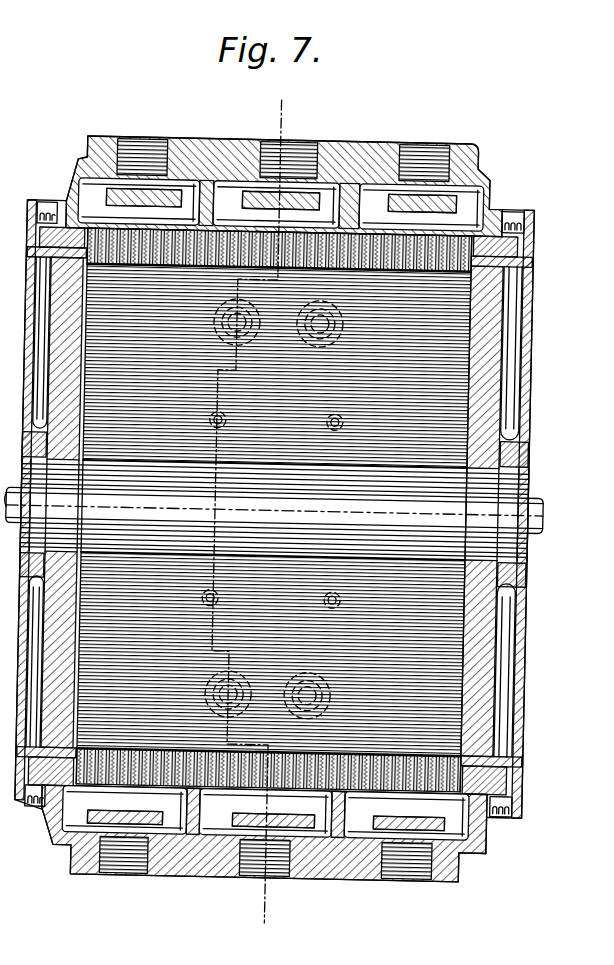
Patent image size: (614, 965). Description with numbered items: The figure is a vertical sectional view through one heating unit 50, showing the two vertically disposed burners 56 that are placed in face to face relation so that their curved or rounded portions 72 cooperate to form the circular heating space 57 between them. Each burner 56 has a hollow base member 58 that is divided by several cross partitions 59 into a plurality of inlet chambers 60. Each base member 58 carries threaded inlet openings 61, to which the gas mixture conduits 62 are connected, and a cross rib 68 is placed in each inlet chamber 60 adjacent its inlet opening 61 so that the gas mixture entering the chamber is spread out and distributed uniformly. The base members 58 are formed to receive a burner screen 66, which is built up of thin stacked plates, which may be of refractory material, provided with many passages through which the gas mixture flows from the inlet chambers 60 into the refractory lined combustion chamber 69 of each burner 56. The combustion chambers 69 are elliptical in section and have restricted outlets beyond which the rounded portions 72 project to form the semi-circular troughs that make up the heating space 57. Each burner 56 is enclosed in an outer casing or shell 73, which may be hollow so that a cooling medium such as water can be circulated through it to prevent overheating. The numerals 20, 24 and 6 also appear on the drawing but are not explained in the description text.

The heating unit 50 is at (74, 148).
The burner 56 is at (472, 140).
The hollow base member 58 is at (485, 192).
The outer casing or shell 73 is at (25, 648).
The bearing channel 20 is at (24, 434).
The threaded inlet opening 61 is at (135, 160).
The burner screen 66 is at (120, 226).
The cross rib 68 is at (237, 200).
The cross partition 59 is at (200, 215).
The inlet chamber 60 is at (186, 192).
The conduit 62 is at (130, 266).
The combustion chamber 69 is at (433, 345).
The curved or rounded portion 72 is at (152, 466).
The circular heating space 57 is at (281, 548).
The shaft end 24 is at (20, 522).
The section line 6- 6 is at (292, 100).